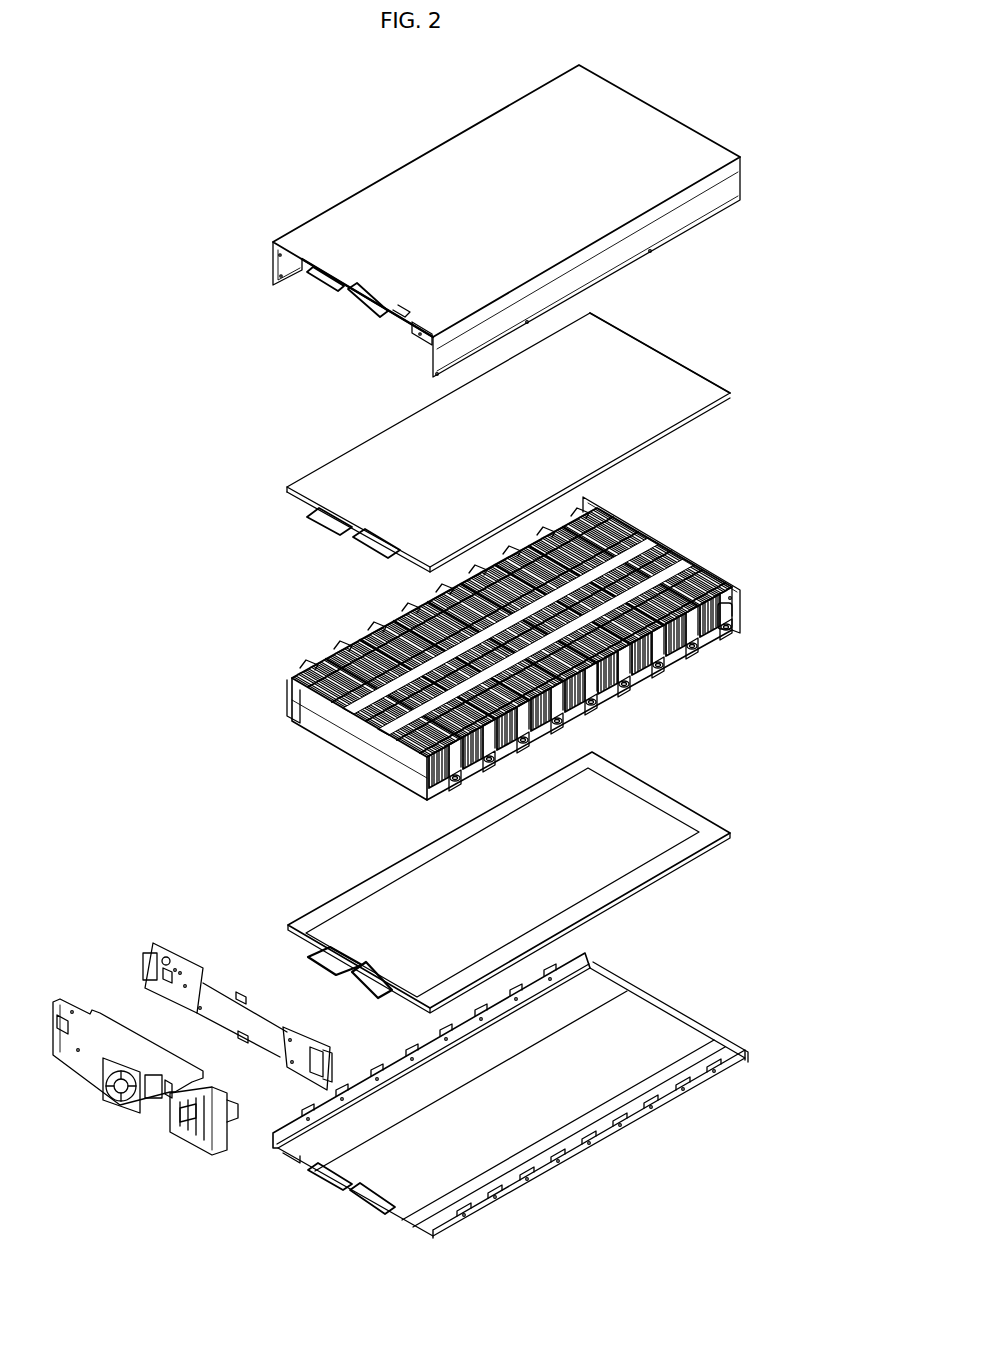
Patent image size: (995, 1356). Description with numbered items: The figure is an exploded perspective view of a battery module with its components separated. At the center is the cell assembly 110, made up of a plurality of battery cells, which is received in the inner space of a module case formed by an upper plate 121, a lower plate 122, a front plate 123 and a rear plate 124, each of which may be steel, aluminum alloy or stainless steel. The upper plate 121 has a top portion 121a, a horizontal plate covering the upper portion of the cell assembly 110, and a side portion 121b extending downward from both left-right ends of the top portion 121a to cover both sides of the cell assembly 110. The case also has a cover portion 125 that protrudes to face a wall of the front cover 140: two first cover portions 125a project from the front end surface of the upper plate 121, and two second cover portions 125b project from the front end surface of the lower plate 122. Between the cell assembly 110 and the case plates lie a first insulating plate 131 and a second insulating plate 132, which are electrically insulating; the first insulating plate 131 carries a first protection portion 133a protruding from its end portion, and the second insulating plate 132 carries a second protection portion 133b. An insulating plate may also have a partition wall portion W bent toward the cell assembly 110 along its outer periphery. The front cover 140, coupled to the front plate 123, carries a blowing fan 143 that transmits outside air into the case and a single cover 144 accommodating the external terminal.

The cell assembly 110 is at (531, 648).
The upper plate 121 is at (541, 221).
The top portion 121a is at (650, 118).
The side portion 121b is at (738, 186).
The lower plate 122 is at (480, 1206).
The front plate 123 is at (160, 952).
The rear plate 124 is at (722, 577).
The cover portion 125 is at (178, 322).
The first cover portion 125a is at (352, 302).
The second cover portion 125b is at (365, 1198).
The first insulating plate 131 is at (507, 447).
The second insulating plate 132 is at (507, 882).
The first protection portion 133a is at (365, 540).
The second protection portion 133b is at (365, 980).
The front cover 140 is at (126, 1088).
The blowing fan 143 is at (112, 1100).
The single cover 144 is at (186, 1132).
The partition wall portion W is at (688, 422).